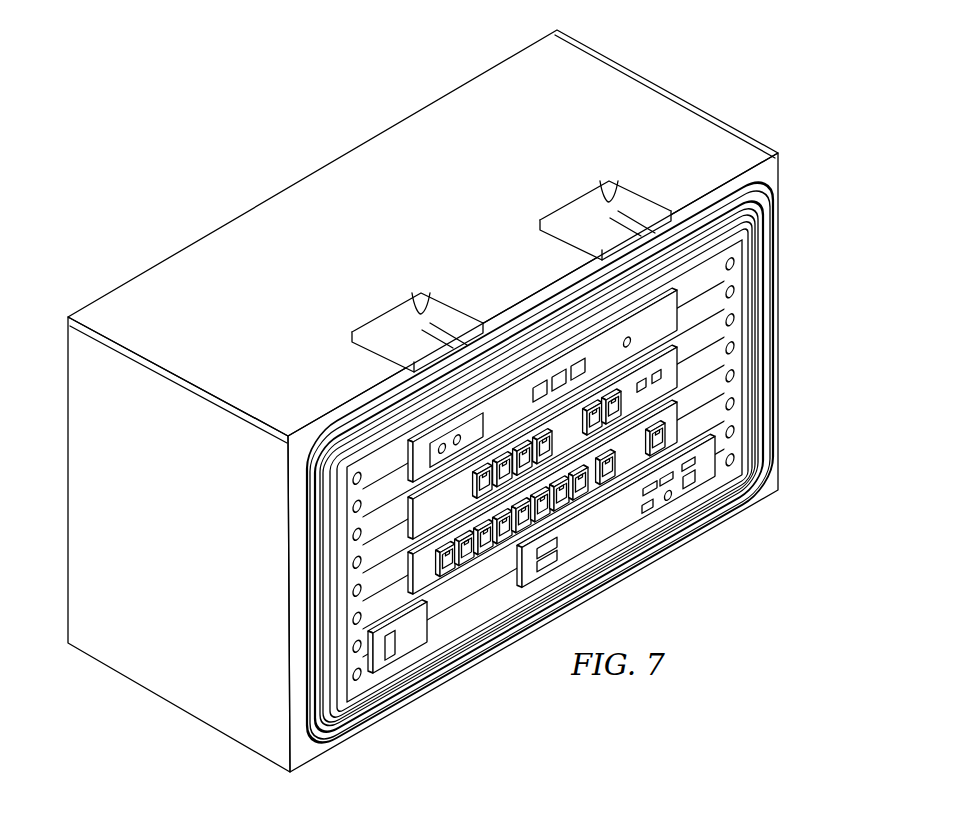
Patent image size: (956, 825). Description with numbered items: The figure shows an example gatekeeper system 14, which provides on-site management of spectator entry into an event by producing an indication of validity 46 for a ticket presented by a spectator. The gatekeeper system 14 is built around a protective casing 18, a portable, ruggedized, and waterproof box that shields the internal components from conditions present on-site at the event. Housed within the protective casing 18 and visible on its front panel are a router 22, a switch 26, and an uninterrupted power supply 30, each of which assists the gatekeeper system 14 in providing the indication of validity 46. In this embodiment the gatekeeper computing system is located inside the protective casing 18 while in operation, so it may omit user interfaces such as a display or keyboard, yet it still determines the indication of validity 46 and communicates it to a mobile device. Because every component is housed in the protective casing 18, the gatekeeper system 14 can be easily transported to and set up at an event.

The gatekeeper system 14 is at (452, 401).
The protective casing 18 is at (644, 103).
The indication of validity 46 is at (733, 274).
The router 22 is at (733, 329).
The switch 26 is at (733, 383).
The uninterrupted power supply 30 is at (733, 438).